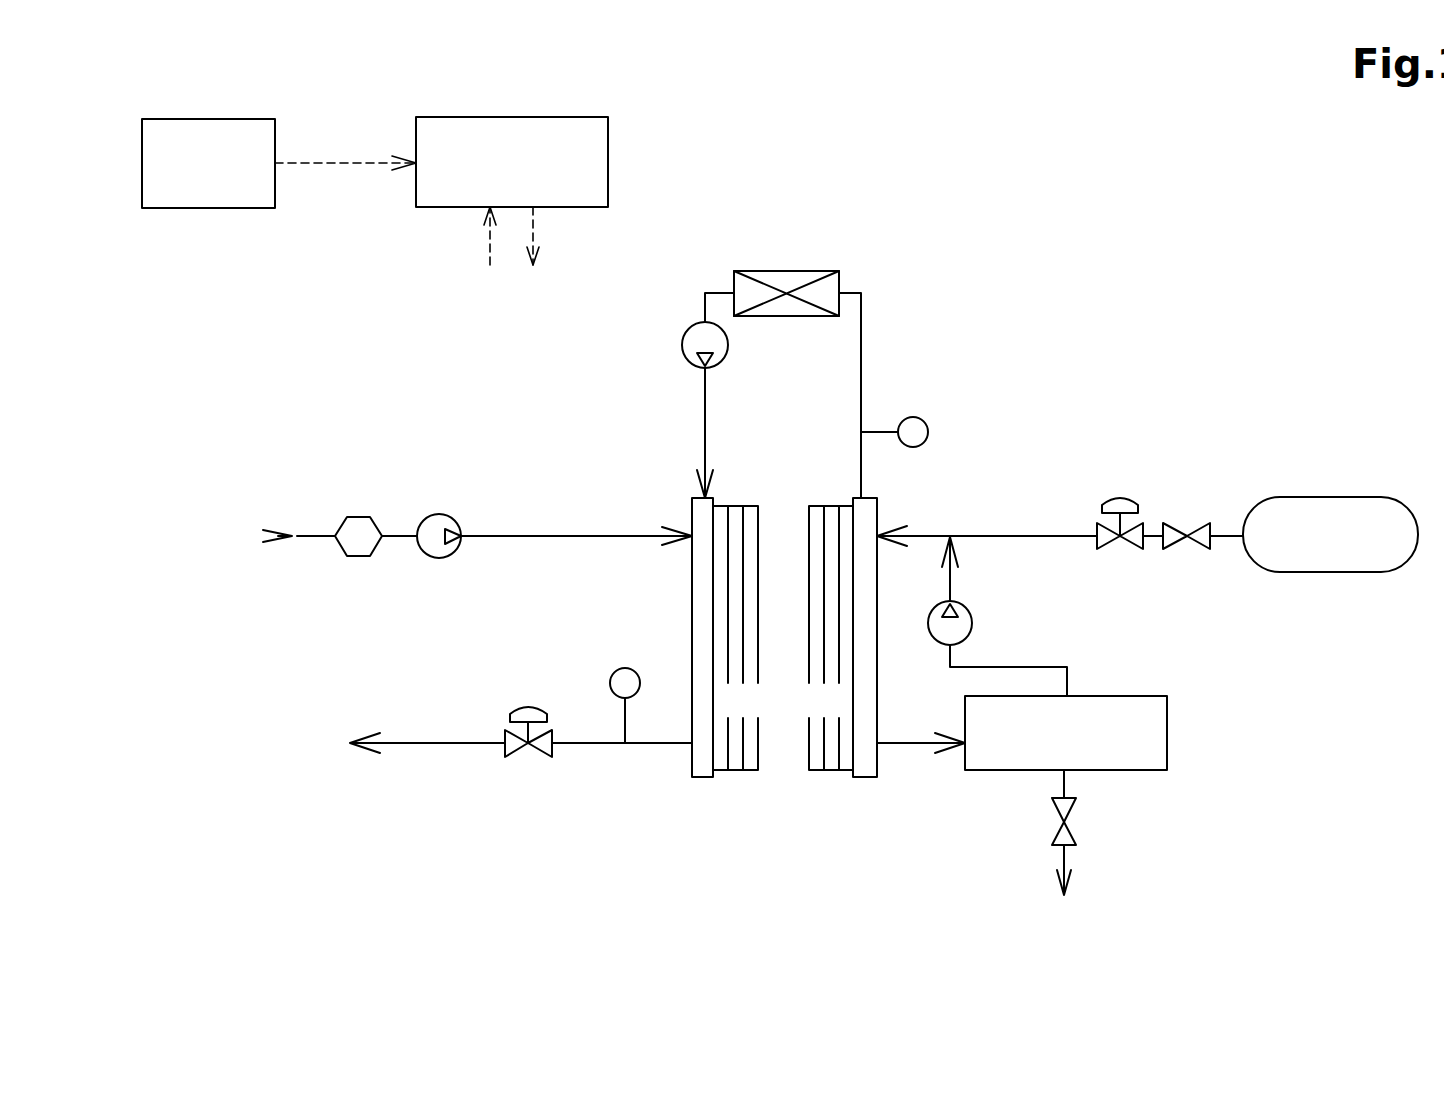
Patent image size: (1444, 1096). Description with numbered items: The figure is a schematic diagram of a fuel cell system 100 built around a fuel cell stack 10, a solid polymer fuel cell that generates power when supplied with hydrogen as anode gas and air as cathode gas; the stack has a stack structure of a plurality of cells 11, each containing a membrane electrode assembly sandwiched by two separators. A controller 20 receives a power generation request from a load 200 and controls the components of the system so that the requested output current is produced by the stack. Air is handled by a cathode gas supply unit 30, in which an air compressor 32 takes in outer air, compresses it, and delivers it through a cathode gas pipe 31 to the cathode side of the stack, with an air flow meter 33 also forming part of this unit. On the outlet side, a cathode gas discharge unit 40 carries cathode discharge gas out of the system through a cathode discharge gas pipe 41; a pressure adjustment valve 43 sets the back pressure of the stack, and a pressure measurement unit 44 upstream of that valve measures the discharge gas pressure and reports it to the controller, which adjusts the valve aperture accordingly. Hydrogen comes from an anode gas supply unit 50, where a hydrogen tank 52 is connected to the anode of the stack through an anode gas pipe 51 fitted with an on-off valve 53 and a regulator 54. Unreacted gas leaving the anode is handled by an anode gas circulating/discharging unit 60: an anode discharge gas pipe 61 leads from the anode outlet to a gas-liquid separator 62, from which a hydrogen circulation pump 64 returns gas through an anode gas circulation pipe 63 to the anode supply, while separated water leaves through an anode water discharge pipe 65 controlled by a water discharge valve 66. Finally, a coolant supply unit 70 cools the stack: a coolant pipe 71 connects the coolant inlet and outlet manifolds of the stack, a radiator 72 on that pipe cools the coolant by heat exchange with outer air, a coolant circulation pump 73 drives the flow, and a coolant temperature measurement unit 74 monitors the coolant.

The fuel cell system 100 is at (1225, 181).
The load 200 is at (240, 119).
The controller 20 is at (525, 117).
The fuel cell stack 10 is at (772, 668).
The cells 11 is at (740, 760).
The cathode gas supply unit 30 is at (401, 494).
The cathode gas pipe 31 is at (530, 535).
The air compressor 32 is at (450, 516).
The air flow meter 33 is at (367, 517).
The cathode gas discharge unit 40 is at (521, 728).
The cathode discharge gas pipe 41 is at (410, 740).
The pressure adjustment valve 43 is at (518, 703).
The pressure measurement unit 44 is at (625, 668).
The anode gas supply unit 50 is at (1147, 481).
The anode gas pipe 51 is at (978, 532).
The hydrogen tank 52 is at (1313, 496).
The on-off valve 53 is at (1173, 523).
The regulator 54 is at (1115, 498).
The anode gas circulating/discharging unit 60 is at (1077, 716).
The anode discharge gas pipe 61 is at (910, 745).
The gas-liquid separator 62 is at (1125, 696).
The anode gas circulation pipe 63 is at (980, 665).
The hydrogen circulation pump 64 is at (965, 607).
The anode water discharge pipe 65 is at (1067, 862).
The water discharge valve 66 is at (1070, 828).
The coolant supply unit 70 is at (802, 355).
The coolant pipe 71 is at (863, 327).
The radiator 72 is at (765, 271).
The coolant circulation pump 73 is at (683, 342).
The coolant temperature measurement unit 74 is at (913, 417).